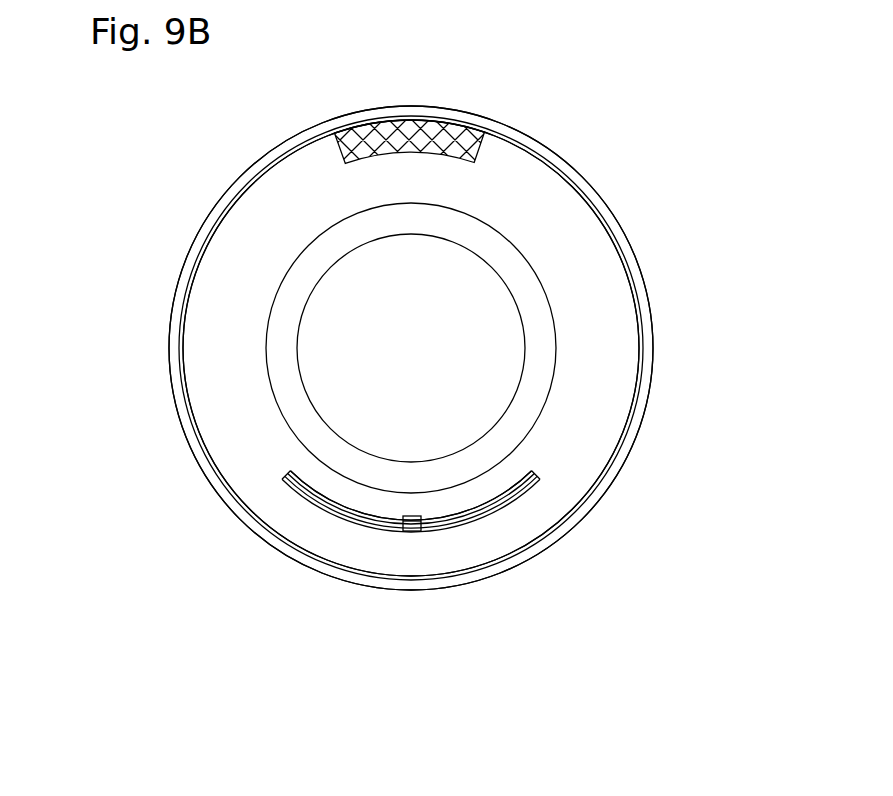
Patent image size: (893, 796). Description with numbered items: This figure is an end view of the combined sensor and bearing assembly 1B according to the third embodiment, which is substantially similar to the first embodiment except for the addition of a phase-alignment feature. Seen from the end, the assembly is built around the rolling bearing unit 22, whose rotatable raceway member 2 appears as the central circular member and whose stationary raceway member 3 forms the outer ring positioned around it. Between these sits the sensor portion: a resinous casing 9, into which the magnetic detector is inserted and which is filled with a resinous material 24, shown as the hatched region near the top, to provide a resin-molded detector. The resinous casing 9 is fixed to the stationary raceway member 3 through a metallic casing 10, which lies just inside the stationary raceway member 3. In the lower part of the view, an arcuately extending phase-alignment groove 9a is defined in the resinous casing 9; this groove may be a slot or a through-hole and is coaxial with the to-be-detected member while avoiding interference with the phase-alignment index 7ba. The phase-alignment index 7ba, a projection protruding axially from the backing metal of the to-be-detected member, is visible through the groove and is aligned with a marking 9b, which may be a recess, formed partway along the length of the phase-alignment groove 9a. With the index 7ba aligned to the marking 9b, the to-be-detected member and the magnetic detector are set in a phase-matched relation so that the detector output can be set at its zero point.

The combined sensor and bearing assembly 1B is at (186, 165).
The rolling bearing unit 22 is at (166, 229).
The stationary raceway member 3 is at (175, 303).
The metallic casing 10 is at (293, 148).
The resinous casing 9 is at (313, 162).
The resinous material 24 is at (477, 126).
The rotatable raceway member 2 is at (538, 353).
The phase-alignment groove 9a is at (512, 503).
The marking 9b is at (410, 522).
The phase-alignment index 7ba is at (411, 532).